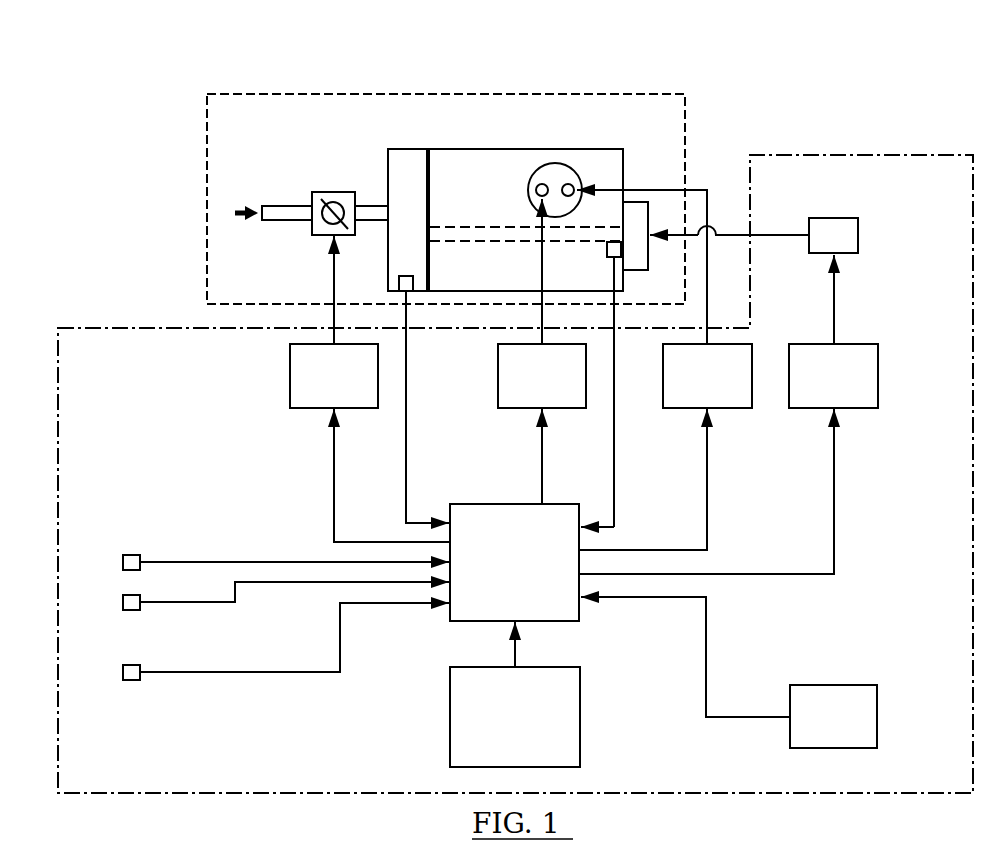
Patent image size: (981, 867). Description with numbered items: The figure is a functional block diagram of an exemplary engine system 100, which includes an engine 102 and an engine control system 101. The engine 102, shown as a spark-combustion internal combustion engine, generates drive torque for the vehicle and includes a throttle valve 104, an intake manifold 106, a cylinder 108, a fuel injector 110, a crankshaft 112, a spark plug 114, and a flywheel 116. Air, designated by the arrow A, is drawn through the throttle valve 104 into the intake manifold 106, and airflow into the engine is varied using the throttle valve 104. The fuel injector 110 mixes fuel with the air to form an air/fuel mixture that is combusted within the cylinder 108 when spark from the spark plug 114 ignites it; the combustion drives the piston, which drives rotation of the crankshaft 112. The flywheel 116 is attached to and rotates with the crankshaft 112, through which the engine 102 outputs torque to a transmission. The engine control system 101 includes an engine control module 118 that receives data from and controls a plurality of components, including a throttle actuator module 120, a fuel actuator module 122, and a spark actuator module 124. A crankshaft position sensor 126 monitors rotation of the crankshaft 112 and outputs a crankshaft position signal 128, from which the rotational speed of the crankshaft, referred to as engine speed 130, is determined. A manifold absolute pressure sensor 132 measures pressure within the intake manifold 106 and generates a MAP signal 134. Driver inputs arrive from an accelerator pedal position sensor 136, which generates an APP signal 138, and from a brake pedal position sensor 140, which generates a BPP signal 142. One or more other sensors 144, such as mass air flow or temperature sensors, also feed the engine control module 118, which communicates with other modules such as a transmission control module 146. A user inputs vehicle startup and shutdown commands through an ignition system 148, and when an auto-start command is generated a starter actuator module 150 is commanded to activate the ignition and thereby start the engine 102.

The engine system 100 is at (98, 100).
The engine control system 101 is at (850, 153).
The engine 102 is at (520, 93).
The throttle valve 104 is at (333, 192).
The intake manifold 106 is at (413, 149).
The cylinder 108 is at (528, 197).
The fuel injector 110 is at (542, 183).
The crankshaft 112 is at (512, 243).
The spark plug 114 is at (568, 183).
The flywheel 116 is at (648, 220).
The engine control module 118 is at (503, 504).
The throttle actuator module 120 is at (290, 385).
The fuel actuator module 122 is at (498, 385).
The spark actuator module 124 is at (663, 385).
The crankshaft position sensor 126 is at (607, 250).
The crankshaft position signal 128 is at (615, 465).
The engine speed 130 is at (615, 477).
The manifold absolute pressure sensor 132 is at (399, 284).
The MAP signal 134 is at (407, 493).
The accelerator pedal position sensor 136 is at (123, 562).
The APP signal 138 is at (275, 562).
The brake pedal position sensor 140 is at (123, 602).
The BPP signal 142 is at (858, 235).
The other sensors 144 is at (827, 685).
The transmission control module 146 is at (490, 667).
The ignition system 148 is at (123, 672).
The starter actuator module 150 is at (878, 385).